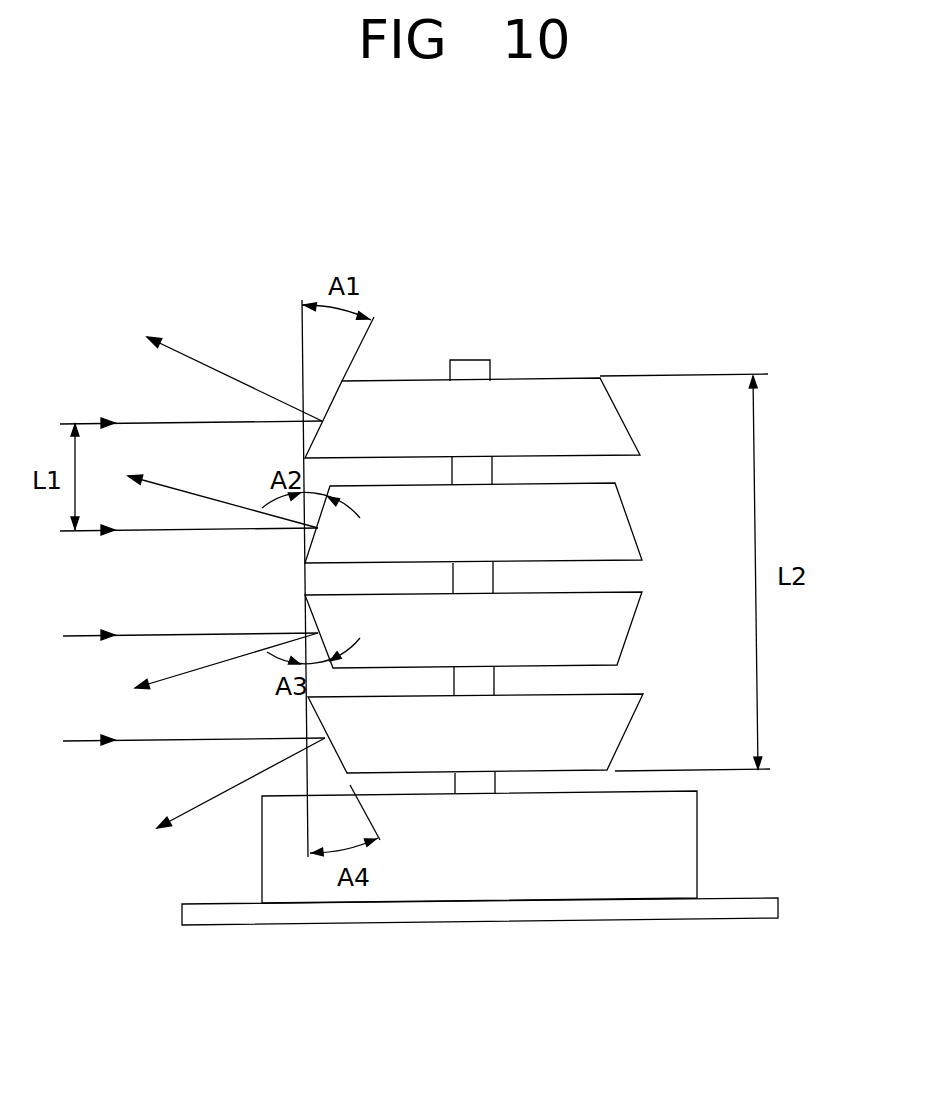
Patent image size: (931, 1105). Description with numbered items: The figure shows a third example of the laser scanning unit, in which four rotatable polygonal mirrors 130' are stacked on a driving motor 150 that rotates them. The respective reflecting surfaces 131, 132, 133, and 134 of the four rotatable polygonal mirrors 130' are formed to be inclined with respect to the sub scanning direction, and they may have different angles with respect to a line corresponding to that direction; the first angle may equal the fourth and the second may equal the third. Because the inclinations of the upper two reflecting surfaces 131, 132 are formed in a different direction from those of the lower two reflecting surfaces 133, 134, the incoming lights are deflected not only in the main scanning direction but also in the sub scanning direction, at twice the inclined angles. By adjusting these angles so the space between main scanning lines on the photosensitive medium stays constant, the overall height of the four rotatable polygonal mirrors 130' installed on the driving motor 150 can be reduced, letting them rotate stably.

The rotatable polygonal mirrors 130' is at (515, 506).
The reflecting surface 131 is at (625, 422).
The reflecting surface 132 is at (630, 520).
The reflecting surface 133 is at (630, 628).
The reflecting surface 134 is at (632, 725).
The driving motor 150 is at (685, 848).